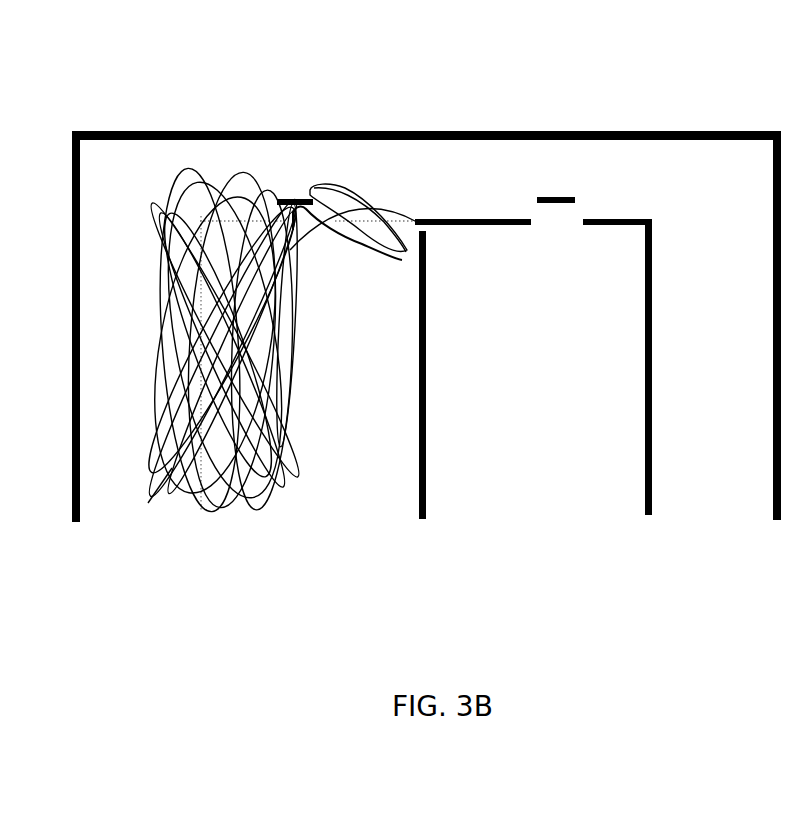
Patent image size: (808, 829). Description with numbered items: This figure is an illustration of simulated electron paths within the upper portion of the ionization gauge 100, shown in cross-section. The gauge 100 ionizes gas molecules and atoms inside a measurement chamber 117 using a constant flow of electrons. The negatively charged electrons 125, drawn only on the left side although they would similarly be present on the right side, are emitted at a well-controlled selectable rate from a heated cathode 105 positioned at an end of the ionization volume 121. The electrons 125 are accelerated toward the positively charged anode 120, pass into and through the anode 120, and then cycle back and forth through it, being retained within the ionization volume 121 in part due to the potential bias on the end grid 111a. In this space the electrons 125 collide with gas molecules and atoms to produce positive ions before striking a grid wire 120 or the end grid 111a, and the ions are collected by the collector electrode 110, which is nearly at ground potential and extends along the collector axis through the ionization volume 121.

The ionization gauge 100 is at (148, 110).
The hot cathode electron source 105 is at (290, 202).
The collector electrode 110 is at (425, 385).
The end grid 111a is at (432, 222).
The measurement chamber 117 is at (76, 410).
The anode 120 is at (651, 446).
The ionization volume 121 is at (352, 421).
The electrons 125 is at (281, 360).